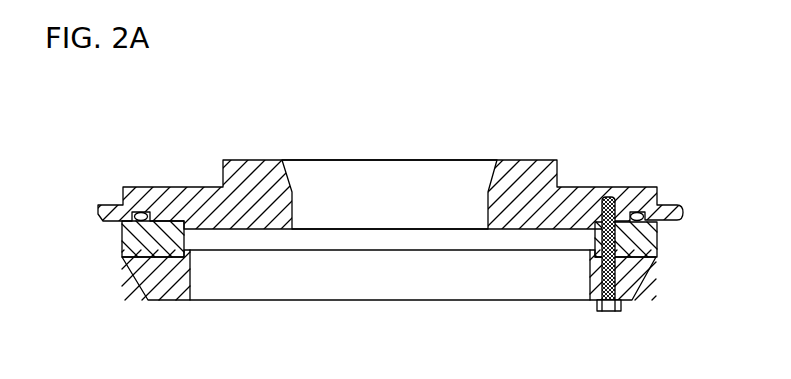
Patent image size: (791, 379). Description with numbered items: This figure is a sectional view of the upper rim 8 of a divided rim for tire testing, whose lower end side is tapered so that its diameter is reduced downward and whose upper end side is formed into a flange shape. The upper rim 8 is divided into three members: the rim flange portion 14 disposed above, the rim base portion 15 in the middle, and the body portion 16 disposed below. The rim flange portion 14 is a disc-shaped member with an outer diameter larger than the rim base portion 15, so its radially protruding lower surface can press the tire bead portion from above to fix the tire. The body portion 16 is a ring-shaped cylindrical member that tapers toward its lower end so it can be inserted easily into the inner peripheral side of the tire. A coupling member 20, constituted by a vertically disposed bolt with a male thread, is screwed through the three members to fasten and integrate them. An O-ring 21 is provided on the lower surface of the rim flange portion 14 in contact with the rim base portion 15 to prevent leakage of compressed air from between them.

The upper rim 8 is at (605, 139).
The rim flange portion 14 is at (631, 186).
The rim base portion 15 is at (648, 242).
The body portion 16 is at (631, 278).
The coupling member 20 is at (605, 277).
The O-ring 21 is at (128, 238).